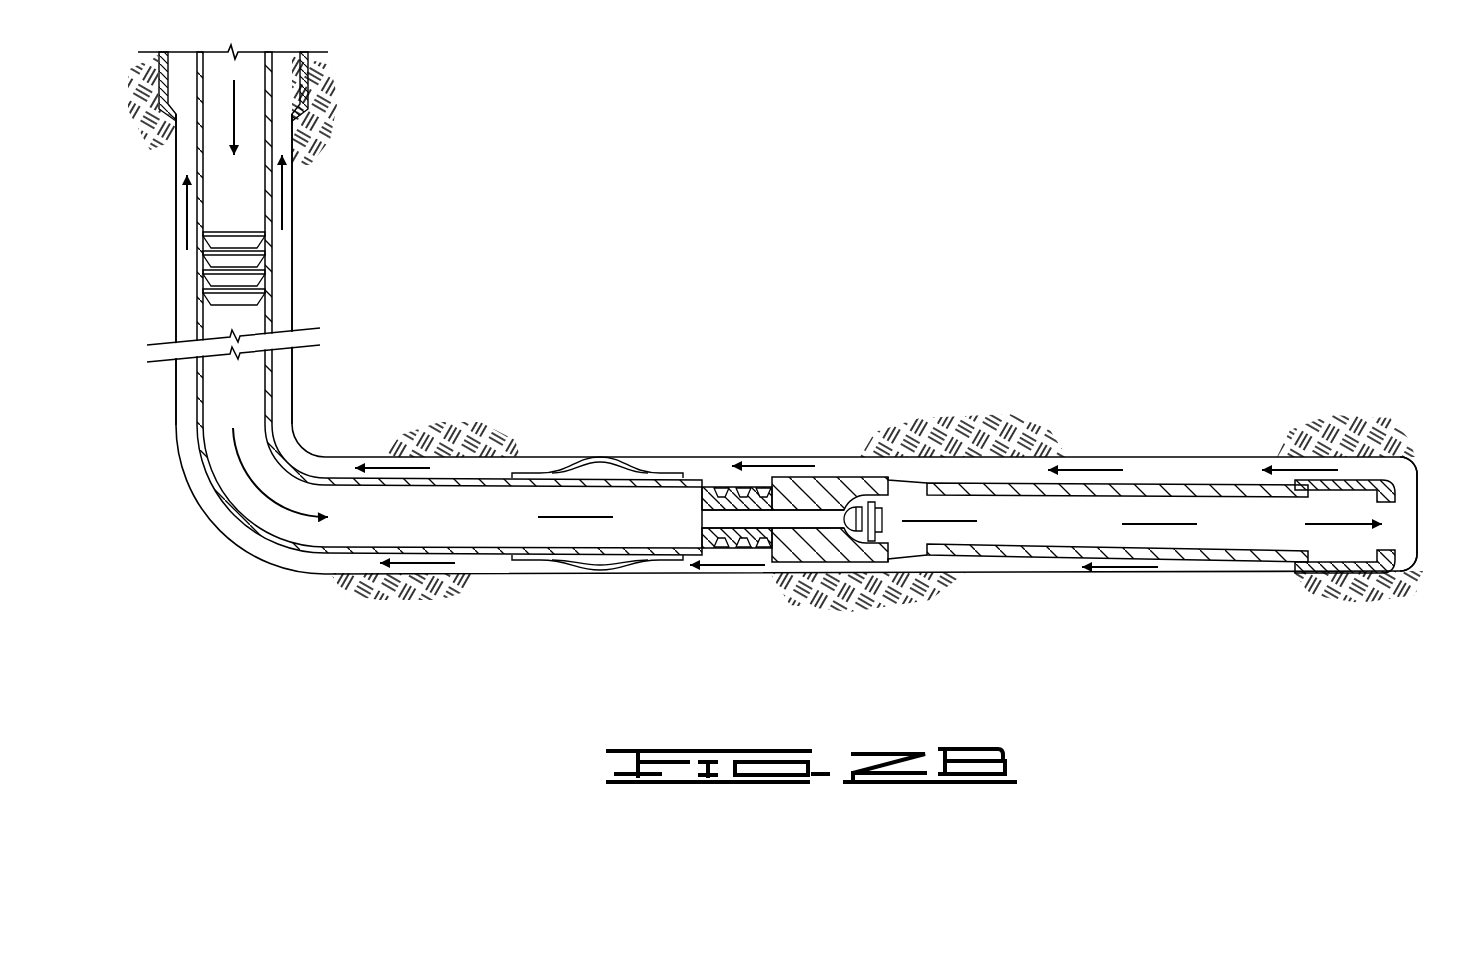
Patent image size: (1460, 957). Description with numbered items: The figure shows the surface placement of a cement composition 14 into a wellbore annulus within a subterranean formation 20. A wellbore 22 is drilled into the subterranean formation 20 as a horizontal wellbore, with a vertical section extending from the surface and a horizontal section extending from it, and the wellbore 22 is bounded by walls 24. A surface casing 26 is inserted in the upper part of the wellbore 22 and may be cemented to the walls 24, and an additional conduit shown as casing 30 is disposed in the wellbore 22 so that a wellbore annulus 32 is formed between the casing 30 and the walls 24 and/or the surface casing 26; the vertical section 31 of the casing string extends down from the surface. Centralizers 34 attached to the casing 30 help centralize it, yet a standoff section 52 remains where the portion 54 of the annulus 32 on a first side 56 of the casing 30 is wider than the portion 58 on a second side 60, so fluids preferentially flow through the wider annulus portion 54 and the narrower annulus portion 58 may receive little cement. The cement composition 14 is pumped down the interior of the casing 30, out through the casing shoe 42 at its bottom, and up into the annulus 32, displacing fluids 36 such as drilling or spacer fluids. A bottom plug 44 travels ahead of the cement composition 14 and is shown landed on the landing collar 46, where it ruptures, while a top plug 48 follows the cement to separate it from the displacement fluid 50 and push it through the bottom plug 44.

The cement composition 14 is at (277, 513).
The subterranean formation 20 is at (945, 423).
The wellbore 22 is at (300, 230).
The walls 24 is at (284, 388).
The surface casing 26 is at (307, 105).
The casing 30 is at (196, 320).
The vertical wellbore section 31 is at (196, 418).
The wellbore annulus 32 is at (283, 318).
The centralizers 34 is at (573, 570).
The fluids 36 is at (452, 468).
The casing shoe 42 is at (1358, 482).
The bottom plug 44 is at (720, 495).
The landing collar 46 is at (803, 553).
The top plug 48 is at (222, 278).
The displacement fluid 50 is at (233, 112).
The standoff section 52 is at (1185, 612).
The wider annulus portion 54 is at (1163, 472).
The first side 56 is at (1222, 485).
The narrower annulus portion 58 is at (1248, 568).
The second side 60 is at (1037, 573).